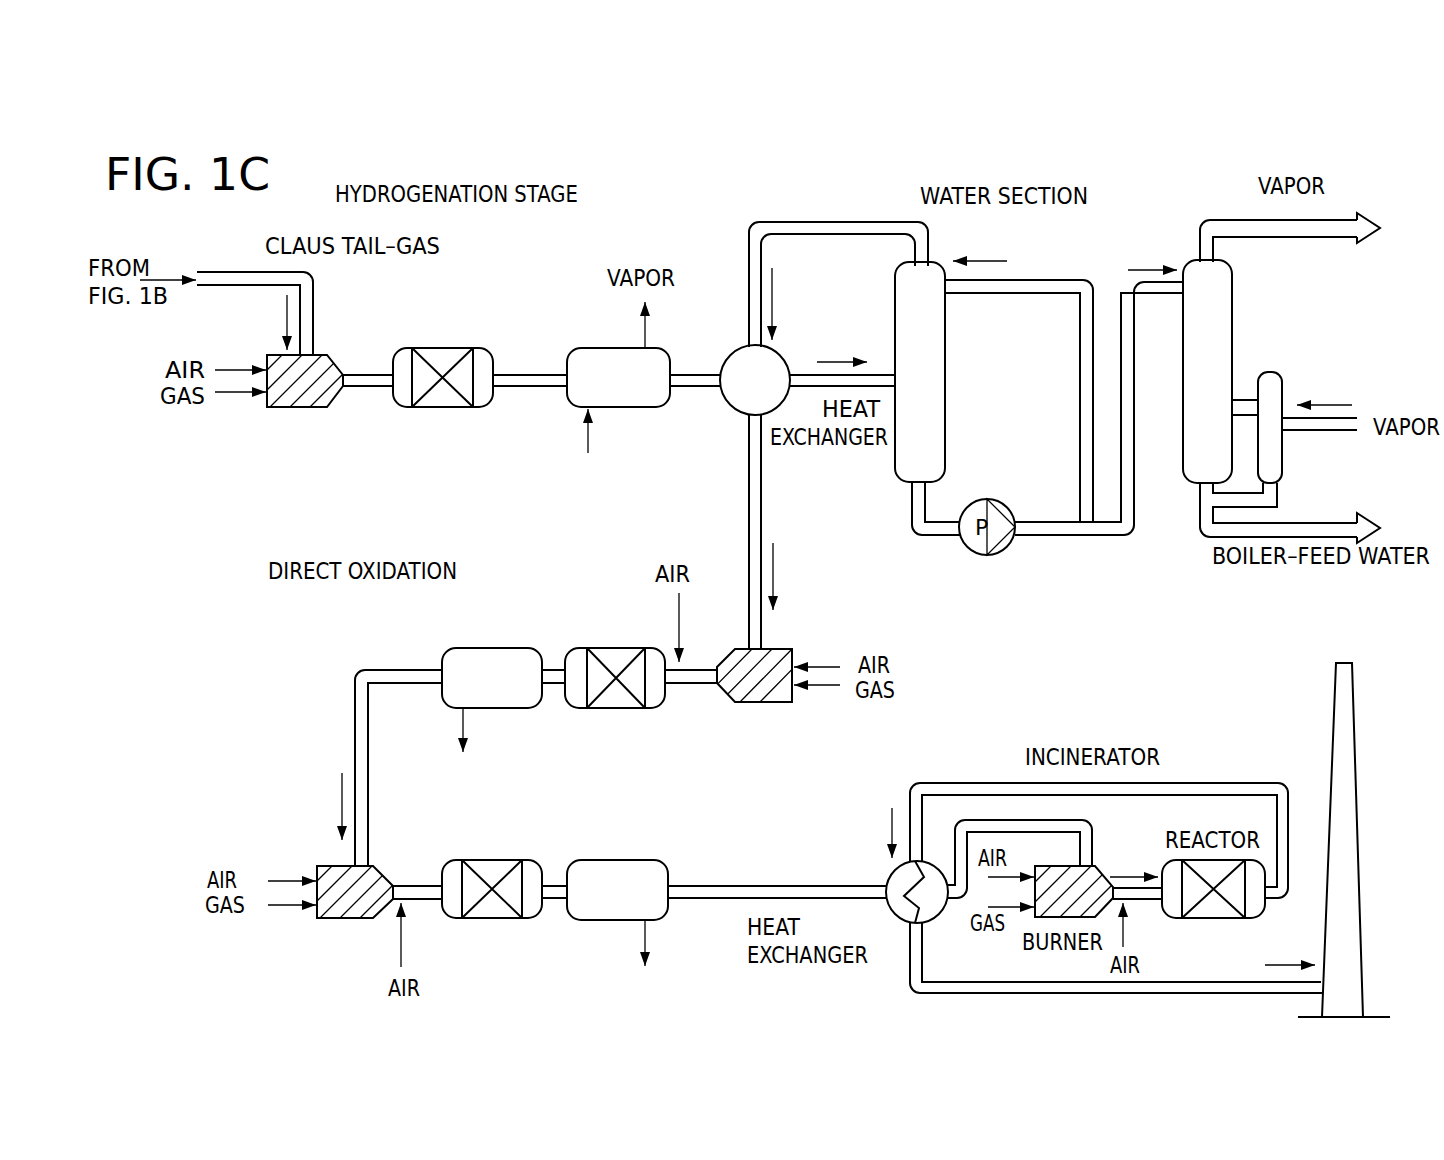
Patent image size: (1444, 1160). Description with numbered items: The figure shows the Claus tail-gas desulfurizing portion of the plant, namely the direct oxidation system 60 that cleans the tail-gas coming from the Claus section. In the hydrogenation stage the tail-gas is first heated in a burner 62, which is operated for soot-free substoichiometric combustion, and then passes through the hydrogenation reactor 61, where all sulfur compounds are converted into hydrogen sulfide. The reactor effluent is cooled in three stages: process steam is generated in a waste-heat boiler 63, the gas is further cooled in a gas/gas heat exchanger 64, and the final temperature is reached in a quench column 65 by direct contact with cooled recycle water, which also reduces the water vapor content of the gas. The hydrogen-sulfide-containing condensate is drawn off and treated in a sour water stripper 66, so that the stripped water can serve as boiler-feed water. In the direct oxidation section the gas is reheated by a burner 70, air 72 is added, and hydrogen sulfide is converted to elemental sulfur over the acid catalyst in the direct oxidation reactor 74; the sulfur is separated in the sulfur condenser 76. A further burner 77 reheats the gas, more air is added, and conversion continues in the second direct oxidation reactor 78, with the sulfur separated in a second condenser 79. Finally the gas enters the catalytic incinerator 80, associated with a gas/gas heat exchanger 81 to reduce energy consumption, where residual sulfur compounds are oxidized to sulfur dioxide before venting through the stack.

The direct oxidation system 60 is at (772, 196).
The hydrogenation reactor 61 is at (450, 348).
The burner 62 is at (332, 360).
The waste-heat boiler 63 is at (610, 348).
The gas/gas heat exchanger 64 is at (777, 350).
The quench column 65 is at (945, 368).
The sour water stripper 66 is at (1180, 342).
The burner 70 is at (785, 649).
The air 72 is at (678, 615).
The direct oxidation reactor 74 is at (612, 710).
The sulfur condenser 76 is at (507, 710).
The burner 77 is at (378, 866).
The second direct oxidation reactor 78 is at (492, 860).
The second condenser 79 is at (628, 860).
The catalytic incinerator 80 is at (1267, 765).
The gas/gas heat exchanger 81 is at (887, 875).